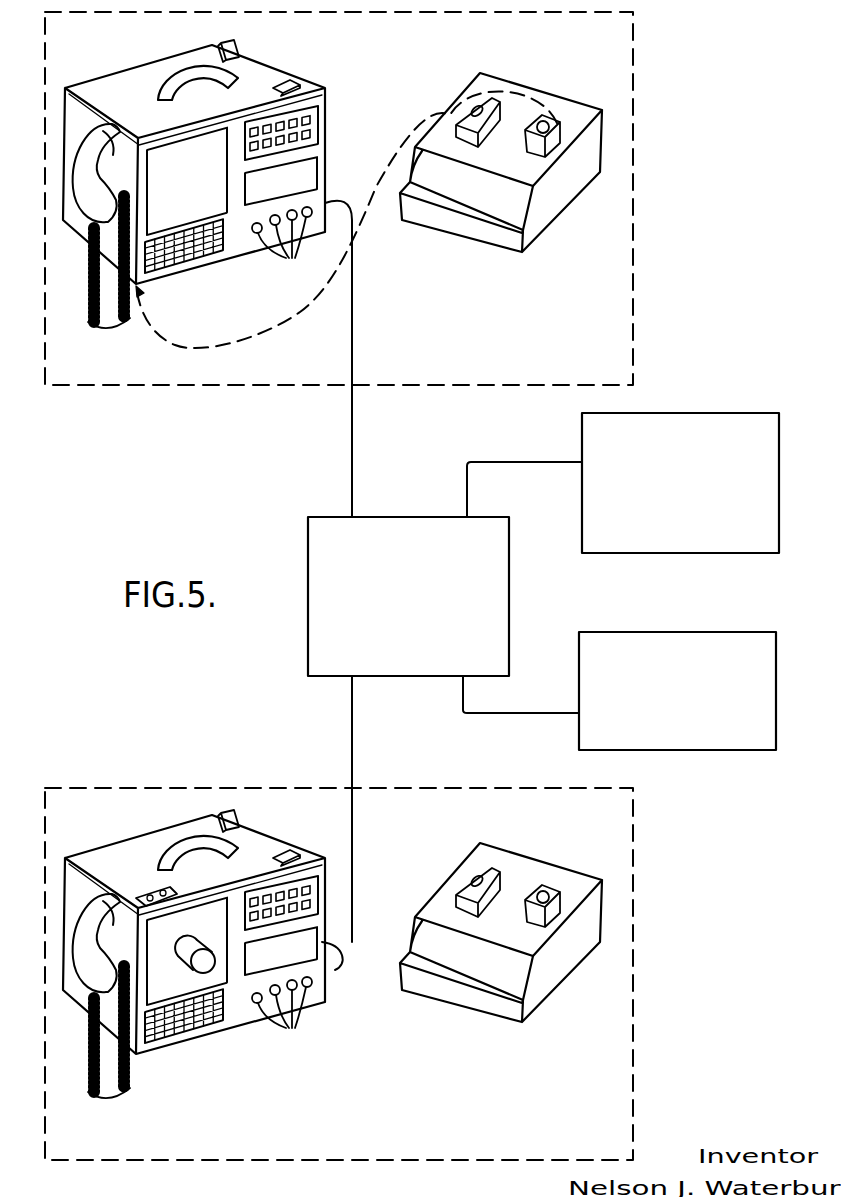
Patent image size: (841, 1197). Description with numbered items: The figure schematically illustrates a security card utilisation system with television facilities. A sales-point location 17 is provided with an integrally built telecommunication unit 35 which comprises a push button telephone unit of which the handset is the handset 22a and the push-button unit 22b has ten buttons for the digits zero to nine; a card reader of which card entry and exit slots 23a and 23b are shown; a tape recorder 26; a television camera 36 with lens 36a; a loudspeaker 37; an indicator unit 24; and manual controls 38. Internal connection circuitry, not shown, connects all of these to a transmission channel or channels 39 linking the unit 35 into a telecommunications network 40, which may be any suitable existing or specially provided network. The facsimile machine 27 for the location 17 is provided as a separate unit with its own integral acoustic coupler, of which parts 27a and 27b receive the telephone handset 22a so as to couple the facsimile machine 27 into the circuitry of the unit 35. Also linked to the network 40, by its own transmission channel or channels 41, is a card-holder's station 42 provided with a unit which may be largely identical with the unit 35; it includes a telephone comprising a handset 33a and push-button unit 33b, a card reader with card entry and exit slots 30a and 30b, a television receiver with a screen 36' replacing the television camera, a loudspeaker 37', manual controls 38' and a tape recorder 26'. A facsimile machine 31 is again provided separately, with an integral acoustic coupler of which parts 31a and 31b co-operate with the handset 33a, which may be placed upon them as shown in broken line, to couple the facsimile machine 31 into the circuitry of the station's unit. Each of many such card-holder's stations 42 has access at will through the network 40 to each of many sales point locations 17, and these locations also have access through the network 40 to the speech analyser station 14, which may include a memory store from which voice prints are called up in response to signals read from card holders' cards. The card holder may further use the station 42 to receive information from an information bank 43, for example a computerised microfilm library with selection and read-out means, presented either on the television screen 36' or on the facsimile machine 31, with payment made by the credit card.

The speech analyser station 14 is at (747, 632).
The sales-point location 17 is at (170, 788).
The handset 22a is at (89, 995).
The push-button unit 22b is at (328, 884).
The card entry slot 23a is at (304, 833).
The card exit slot 23b is at (252, 820).
The indicator unit 24 is at (150, 888).
The tape recorder 26 is at (308, 970).
The tape recorder 26' is at (307, 170).
The facsimile machine 27 is at (543, 997).
The acoustic coupler part 27a is at (492, 868).
The acoustic coupler part 27b is at (548, 888).
The card entry slot 30a is at (302, 78).
The card exit slot 30b is at (240, 50).
The facsimile machine 31 is at (558, 222).
The acoustic coupler part 31a is at (492, 110).
The acoustic coupler part 31b is at (555, 122).
The handset 33a is at (88, 225).
The push-button unit 33b is at (327, 111).
The telecommunication unit 35 is at (157, 837).
The television camera 36 is at (187, 997).
The television screen 36' is at (187, 181).
The lens 36a is at (213, 951).
The loudspeaker 37 is at (190, 1036).
The loudspeaker 37' is at (189, 272).
The manual controls 38 is at (289, 1020).
The manual controls 38' is at (282, 248).
The transmission channel 39 is at (352, 728).
The telecommunications network 40 is at (308, 640).
The transmission channel 41 is at (352, 480).
The card-holder's station 42 is at (288, 385).
The information bank 43 is at (627, 553).